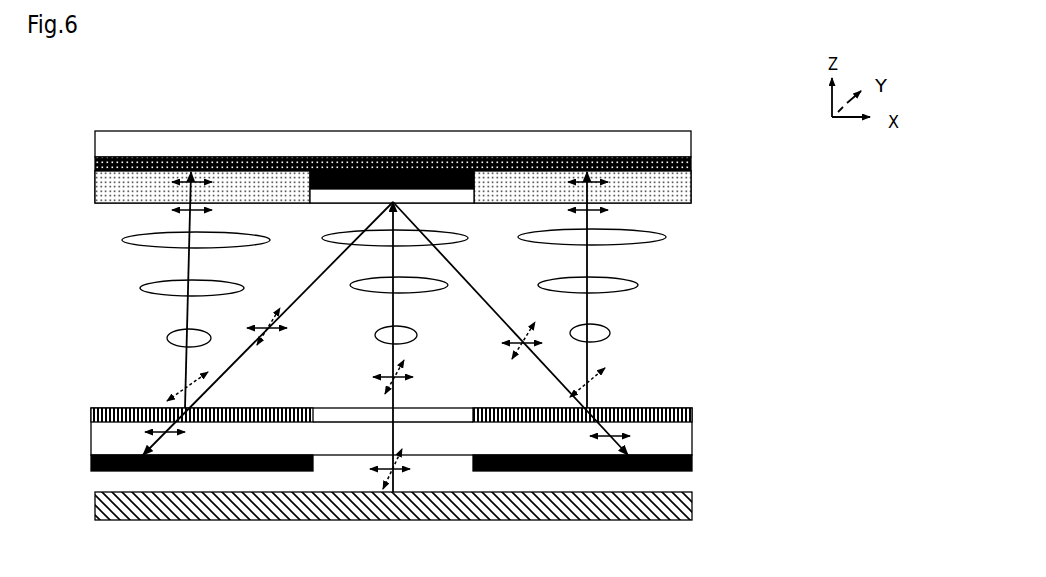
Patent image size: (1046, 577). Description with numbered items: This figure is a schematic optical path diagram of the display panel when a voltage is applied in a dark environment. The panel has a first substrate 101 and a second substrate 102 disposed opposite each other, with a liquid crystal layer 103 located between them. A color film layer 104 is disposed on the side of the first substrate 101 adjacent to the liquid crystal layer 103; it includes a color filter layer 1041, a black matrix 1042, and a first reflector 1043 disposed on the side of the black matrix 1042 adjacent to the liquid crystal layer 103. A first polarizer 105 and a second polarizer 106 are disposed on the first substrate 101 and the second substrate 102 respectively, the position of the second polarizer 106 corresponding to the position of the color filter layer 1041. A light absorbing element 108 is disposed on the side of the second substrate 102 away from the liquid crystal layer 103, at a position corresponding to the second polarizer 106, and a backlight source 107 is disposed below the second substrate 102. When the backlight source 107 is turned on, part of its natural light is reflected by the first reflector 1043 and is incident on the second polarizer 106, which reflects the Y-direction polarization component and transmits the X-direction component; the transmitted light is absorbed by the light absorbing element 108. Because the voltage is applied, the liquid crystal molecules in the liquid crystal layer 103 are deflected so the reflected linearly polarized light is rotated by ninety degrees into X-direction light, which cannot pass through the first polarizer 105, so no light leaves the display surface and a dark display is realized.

The first substrate 101 is at (678, 140).
The first polarizer 105 is at (692, 161).
The color film layer 104 is at (691, 203).
The color filter layer 1041 is at (692, 187).
The black matrix 1042 is at (397, 154).
The first reflector 1043 is at (447, 193).
The liquid crystal layer 103 is at (685, 277).
The second polarizer 106 is at (692, 416).
The second substrate 102 is at (683, 438).
The light absorbing element 108 is at (692, 467).
The backlight source 107 is at (692, 503).